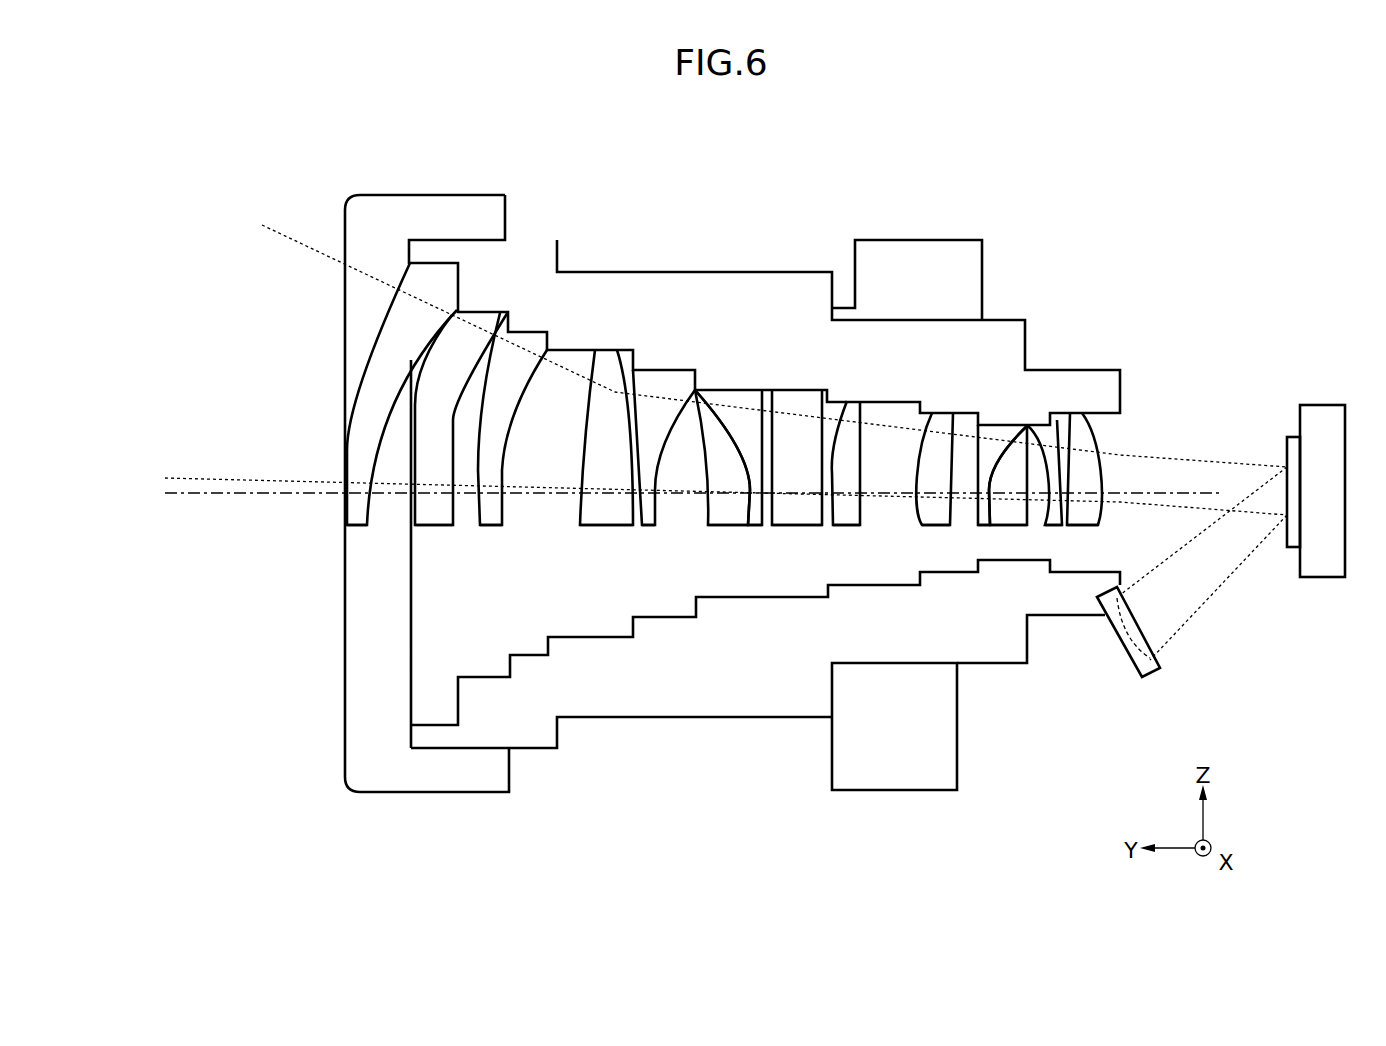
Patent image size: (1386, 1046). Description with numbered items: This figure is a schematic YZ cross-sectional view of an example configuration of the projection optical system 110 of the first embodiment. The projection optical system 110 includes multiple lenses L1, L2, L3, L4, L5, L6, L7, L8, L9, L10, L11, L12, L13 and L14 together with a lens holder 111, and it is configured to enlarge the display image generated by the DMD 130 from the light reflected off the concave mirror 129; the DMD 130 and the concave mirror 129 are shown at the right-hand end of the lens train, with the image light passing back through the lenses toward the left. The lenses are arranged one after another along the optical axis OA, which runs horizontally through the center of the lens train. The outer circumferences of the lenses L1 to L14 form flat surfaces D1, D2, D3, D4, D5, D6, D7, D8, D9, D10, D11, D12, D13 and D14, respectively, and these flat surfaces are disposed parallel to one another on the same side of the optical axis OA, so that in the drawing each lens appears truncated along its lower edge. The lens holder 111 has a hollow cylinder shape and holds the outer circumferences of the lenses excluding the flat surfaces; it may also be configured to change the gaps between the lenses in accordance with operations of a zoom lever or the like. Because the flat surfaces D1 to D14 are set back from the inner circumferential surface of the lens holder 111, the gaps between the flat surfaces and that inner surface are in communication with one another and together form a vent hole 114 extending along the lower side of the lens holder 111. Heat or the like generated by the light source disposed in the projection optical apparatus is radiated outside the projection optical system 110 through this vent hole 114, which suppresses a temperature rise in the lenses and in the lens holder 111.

The projection optical system 110 is at (1092, 214).
The lens holder 111 is at (573, 283).
The vent hole 114 is at (438, 655).
The concave mirror 129 is at (1122, 667).
The DMD 130 is at (1287, 452).
The optical axis OA is at (675, 493).
The lens L1 is at (375, 378).
The lens L2 is at (440, 350).
The lens L3 is at (527, 345).
The lens L4 is at (607, 372).
The lens L5 is at (666, 383).
The lens L6 is at (712, 413).
The lens L7 is at (740, 402).
The lens L8 is at (795, 402).
The lens L9 is at (857, 412).
The lens L10 is at (943, 423).
The lens L11 is at (993, 428).
The lens L12 is at (1018, 430).
The lens L13 is at (1047, 437).
The lens L14 is at (1085, 434).
The flat surface D1 is at (353, 530).
The flat surface D2 is at (435, 528).
The flat surface D3 is at (493, 528).
The flat surface D4 is at (608, 527).
The flat surface D5 is at (647, 527).
The flat surface D6 is at (727, 527).
The flat surface D7 is at (755, 527).
The flat surface D8 is at (797, 527).
The flat surface D9 is at (845, 527).
The flat surface D10 is at (935, 527).
The flat surface D11 is at (990, 527).
The flat surface D12 is at (1010, 527).
The flat surface D13 is at (1052, 527).
The flat surface D14 is at (1085, 527).